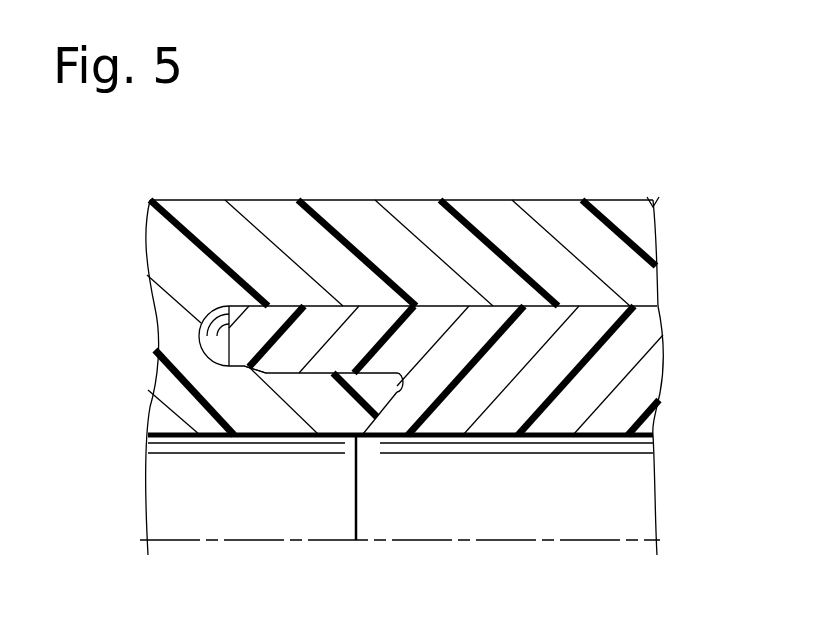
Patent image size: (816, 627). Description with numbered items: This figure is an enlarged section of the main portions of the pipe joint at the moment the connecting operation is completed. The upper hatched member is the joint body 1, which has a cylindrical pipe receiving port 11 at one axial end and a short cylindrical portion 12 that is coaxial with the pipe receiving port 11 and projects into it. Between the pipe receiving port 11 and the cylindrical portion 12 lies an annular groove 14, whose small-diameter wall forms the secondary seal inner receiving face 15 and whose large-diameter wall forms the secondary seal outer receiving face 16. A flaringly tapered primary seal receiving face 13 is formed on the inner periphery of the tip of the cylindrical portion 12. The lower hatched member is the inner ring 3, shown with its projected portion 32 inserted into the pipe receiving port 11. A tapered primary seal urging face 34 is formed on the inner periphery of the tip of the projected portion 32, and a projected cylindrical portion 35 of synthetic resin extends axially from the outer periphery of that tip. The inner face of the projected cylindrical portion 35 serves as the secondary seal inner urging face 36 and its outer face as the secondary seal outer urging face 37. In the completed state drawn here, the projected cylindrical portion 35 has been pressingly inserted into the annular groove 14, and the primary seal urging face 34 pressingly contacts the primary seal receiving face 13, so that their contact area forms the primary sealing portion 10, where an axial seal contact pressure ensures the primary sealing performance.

The joint body 1 is at (185, 201).
The inner ring 3 is at (660, 393).
The primary sealing portion 10 is at (362, 438).
The pipe receiving port 11 is at (647, 228).
The cylindrical portion 12 is at (303, 408).
The primary seal receiving face 13 is at (381, 436).
The annular groove 14 is at (200, 333).
The secondary seal inner receiving face 15 is at (322, 360).
The secondary seal outer receiving face 16 is at (379, 310).
The projected portion 32 is at (562, 420).
The primary seal urging face 34 is at (402, 400).
The projected cylindrical portion 35 is at (326, 320).
The secondary seal inner urging face 36 is at (280, 375).
The secondary seal outer urging face 37 is at (278, 306).